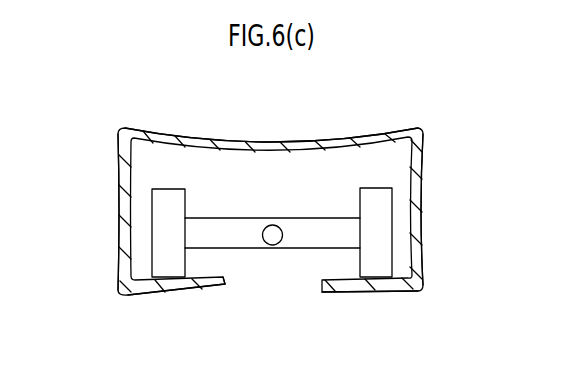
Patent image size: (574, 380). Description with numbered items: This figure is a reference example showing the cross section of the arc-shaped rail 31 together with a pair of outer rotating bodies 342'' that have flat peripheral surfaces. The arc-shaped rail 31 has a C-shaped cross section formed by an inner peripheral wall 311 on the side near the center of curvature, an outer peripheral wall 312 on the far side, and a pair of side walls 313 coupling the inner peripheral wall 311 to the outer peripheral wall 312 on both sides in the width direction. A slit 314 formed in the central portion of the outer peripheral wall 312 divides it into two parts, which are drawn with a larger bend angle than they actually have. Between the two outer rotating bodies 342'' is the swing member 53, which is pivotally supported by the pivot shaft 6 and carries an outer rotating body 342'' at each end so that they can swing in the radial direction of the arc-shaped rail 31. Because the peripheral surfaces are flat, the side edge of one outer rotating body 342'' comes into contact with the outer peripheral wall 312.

The arc-shaped rail 31 is at (107, 100).
The inner peripheral wall 311 is at (275, 140).
The outer peripheral wall 312 is at (183, 294).
The side wall 313 is at (123, 197).
The slit 314 is at (226, 283).
The outer rotating body 342'' is at (272, 173).
The swing member 53 is at (313, 238).
The pivot shaft 6 is at (272, 246).